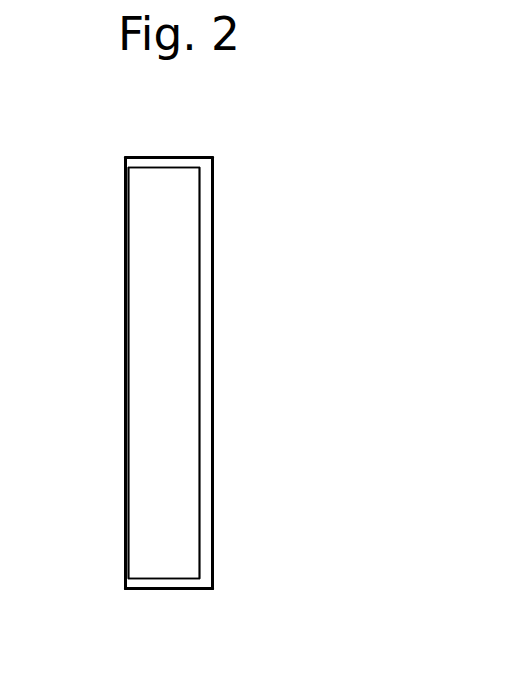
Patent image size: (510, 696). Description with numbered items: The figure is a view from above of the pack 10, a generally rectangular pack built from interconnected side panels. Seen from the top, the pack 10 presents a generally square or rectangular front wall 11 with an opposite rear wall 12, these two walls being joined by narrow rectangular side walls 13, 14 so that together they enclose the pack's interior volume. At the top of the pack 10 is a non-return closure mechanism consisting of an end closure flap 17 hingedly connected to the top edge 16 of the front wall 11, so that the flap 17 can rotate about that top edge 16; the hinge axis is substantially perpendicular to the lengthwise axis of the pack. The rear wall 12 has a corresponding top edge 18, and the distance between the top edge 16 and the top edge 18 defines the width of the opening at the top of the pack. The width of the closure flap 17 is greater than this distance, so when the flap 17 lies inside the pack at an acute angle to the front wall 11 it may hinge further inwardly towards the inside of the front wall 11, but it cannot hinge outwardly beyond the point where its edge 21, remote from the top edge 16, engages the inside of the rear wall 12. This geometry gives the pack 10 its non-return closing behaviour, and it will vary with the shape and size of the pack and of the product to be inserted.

The pack 10 is at (247, 135).
The front wall 11 is at (121, 292).
The rear wall 12 is at (216, 300).
The side wall 13 is at (160, 592).
The side wall 14 is at (150, 156).
The top edge of the front wall 16 is at (125, 373).
The end closure flap 17 is at (170, 458).
The top edge of the rear wall 18 is at (213, 232).
The edge of the closure flap 21 is at (200, 378).